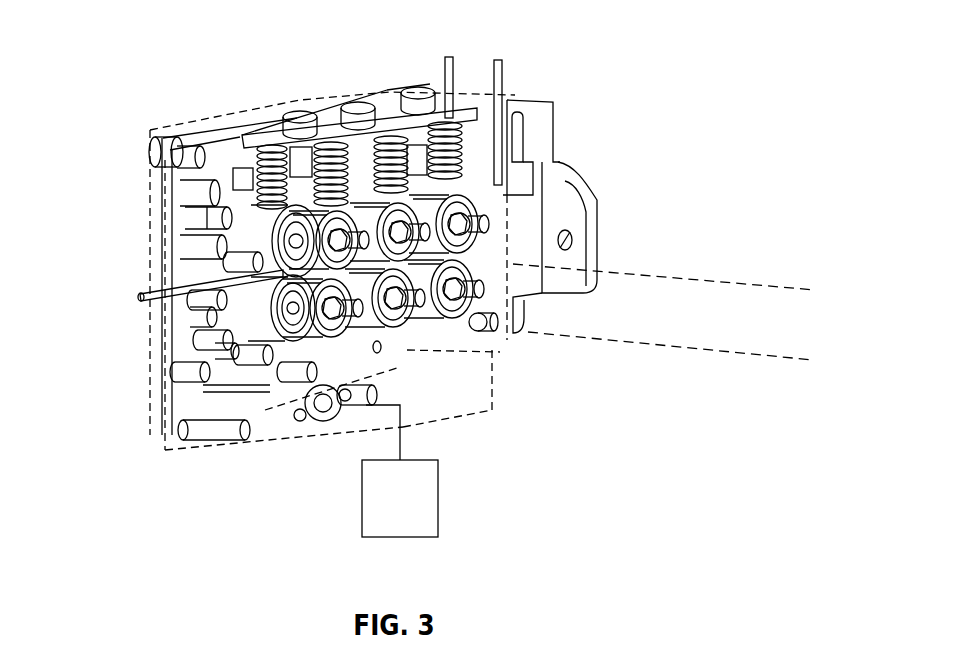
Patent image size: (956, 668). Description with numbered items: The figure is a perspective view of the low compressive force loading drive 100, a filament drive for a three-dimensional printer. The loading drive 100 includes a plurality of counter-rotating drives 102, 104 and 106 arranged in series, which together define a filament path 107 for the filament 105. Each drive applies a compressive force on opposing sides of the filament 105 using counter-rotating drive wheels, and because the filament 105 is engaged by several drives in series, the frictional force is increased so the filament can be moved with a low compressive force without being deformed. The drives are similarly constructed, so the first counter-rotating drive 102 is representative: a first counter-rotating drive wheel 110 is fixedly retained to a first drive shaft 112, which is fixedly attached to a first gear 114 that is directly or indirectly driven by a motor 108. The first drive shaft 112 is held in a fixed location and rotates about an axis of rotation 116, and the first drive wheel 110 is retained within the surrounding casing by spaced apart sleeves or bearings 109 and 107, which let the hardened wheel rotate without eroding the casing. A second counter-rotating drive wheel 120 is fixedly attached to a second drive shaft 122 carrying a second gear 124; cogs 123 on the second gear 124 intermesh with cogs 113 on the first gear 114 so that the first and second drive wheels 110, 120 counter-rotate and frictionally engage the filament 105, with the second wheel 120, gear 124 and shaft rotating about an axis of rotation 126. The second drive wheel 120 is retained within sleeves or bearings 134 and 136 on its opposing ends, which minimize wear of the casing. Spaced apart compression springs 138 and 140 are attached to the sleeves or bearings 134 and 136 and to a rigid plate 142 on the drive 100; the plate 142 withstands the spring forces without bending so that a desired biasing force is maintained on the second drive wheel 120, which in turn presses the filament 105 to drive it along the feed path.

The low compressive force loading drive 100 is at (167, 86).
The counter-rotating drive 102 is at (315, 335).
The counter-rotating drive 104 is at (403, 348).
The filament 105 is at (140, 294).
The counter-rotating drive 106 is at (490, 290).
The filament path / sleeve or bearing 107 is at (245, 258).
The motor 108 is at (440, 497).
The sleeve or bearing 109 is at (285, 335).
The first counter-rotating drive wheel 110 is at (240, 335).
The first drive shaft 112 is at (347, 335).
The cogs 113 is at (195, 340).
The first gear 114 is at (187, 312).
The axis of rotation 116 is at (748, 355).
The second counter-rotating drive wheel 120 is at (322, 208).
The second drive shaft 122 is at (357, 243).
The cogs 123 is at (197, 213).
The second gear 124 is at (190, 203).
The axis of rotation 126 is at (788, 288).
The sleeve or bearing 134 is at (362, 180).
The sleeve or bearing 136 is at (257, 215).
The compression spring 138 is at (300, 195).
The compression spring 140 is at (268, 140).
The plate 142 is at (457, 112).